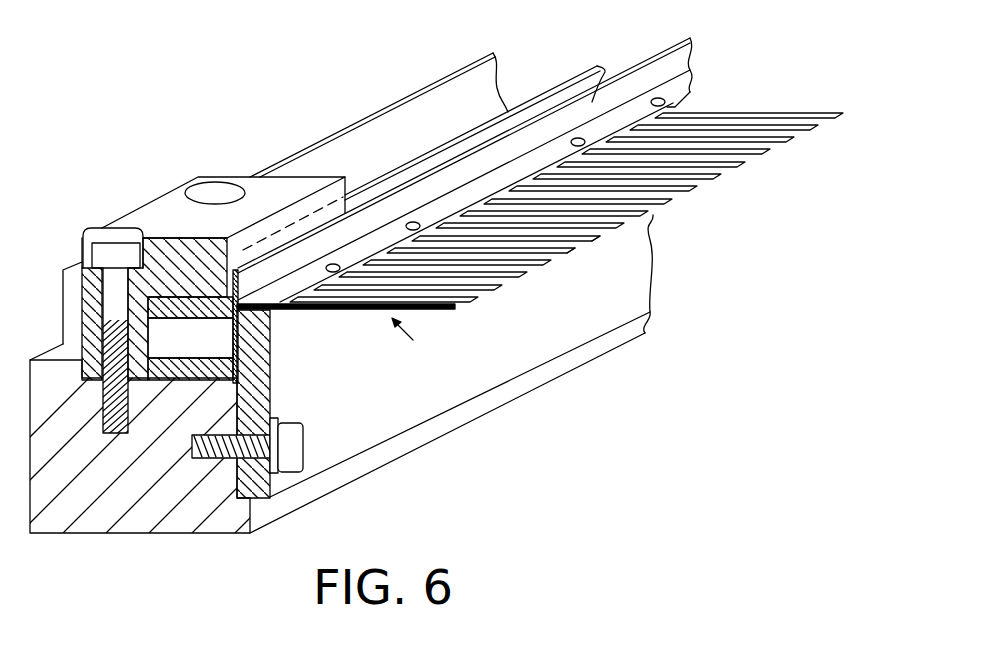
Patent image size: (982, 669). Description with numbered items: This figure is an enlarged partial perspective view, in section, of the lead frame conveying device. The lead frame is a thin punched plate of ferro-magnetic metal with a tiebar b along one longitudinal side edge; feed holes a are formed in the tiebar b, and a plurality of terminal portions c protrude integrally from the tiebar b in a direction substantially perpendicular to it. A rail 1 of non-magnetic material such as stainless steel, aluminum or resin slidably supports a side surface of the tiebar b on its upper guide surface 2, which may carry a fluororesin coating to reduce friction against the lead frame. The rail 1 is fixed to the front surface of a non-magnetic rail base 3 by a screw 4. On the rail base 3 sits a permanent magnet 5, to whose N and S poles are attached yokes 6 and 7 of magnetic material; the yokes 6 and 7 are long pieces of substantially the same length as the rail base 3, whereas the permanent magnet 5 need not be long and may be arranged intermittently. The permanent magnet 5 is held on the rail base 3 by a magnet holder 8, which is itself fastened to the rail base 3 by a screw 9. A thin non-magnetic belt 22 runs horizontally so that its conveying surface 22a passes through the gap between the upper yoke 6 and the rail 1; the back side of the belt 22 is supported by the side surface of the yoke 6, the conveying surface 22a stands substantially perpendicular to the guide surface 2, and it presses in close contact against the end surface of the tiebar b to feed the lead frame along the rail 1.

The rail 1 is at (453, 393).
The upper surface (guide surface) 2 is at (265, 302).
The rail base 3 is at (118, 520).
The screw 4 is at (297, 467).
The permanent magnet 5 is at (163, 350).
The yoke 6 is at (182, 302).
The yoke 7 is at (213, 369).
The magnet holder 8 is at (157, 210).
The screw 9 is at (110, 303).
The belt 22 is at (588, 110).
The conveying surface 22a is at (680, 72).
The feed hole a is at (413, 228).
The tiebar b is at (305, 280).
The terminal portion c is at (583, 243).